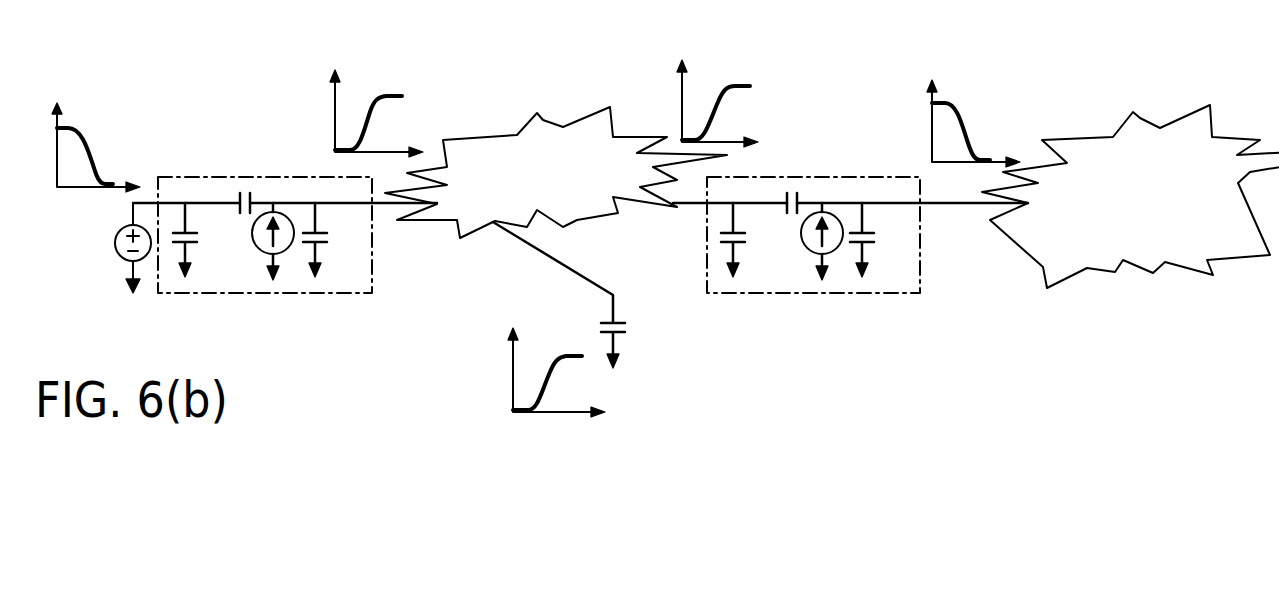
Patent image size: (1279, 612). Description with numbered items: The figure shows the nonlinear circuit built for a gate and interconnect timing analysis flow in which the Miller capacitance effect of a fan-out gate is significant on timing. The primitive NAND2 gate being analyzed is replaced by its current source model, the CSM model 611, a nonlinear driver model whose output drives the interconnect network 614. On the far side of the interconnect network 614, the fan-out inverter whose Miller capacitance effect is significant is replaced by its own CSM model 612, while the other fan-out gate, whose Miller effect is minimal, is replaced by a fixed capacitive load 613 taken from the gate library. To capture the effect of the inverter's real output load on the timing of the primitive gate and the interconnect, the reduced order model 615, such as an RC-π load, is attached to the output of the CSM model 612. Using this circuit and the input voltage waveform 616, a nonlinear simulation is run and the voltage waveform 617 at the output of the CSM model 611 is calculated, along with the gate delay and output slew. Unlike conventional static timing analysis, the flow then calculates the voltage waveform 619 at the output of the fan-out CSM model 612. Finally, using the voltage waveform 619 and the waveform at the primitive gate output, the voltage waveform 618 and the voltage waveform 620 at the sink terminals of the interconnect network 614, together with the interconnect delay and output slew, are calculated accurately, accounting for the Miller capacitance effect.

The CSM model of NAND2 gate 611 is at (180, 177).
The CSM model of CMOS inverter 612 is at (853, 177).
The fixed capacitive load 613 is at (617, 312).
The interconnect network 614 is at (545, 120).
The reduced order model 615 is at (1140, 118).
The input voltage waveform 616 is at (87, 148).
The voltage waveform at output of primitive gate 617 is at (375, 95).
The voltage waveform at interconnect sink terminal 618 is at (722, 85).
The voltage waveform at output of fan-out gate 619 is at (958, 112).
The voltage waveform at interconnect sink terminal 620 is at (570, 355).